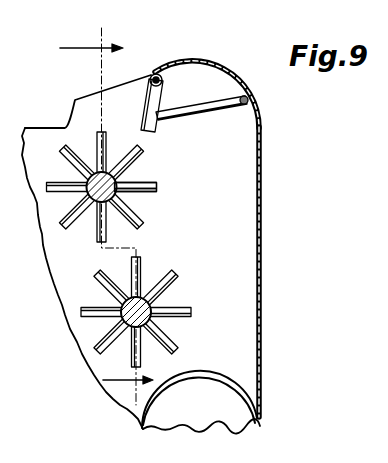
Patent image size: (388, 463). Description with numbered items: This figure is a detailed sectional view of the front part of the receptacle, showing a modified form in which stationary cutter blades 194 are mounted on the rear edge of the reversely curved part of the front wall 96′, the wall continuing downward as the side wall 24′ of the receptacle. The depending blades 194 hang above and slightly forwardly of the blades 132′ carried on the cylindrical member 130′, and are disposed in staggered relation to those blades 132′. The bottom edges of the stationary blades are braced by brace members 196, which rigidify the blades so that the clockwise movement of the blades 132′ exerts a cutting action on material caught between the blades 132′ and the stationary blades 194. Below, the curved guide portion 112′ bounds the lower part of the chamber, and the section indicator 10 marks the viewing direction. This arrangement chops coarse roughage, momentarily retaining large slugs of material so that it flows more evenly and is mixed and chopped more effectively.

The section line / viewing direction arrows 10 is at (106, 214).
The housing side wall 24' is at (287, 272).
The reversely curved part of the front wall 96' is at (207, 75).
The arcuate bottom guide 112' is at (230, 404).
The cylindrical member 130' is at (102, 200).
The blades 132' is at (167, 183).
The stationary cutter blades 194 is at (153, 131).
The brace members 196 is at (232, 108).